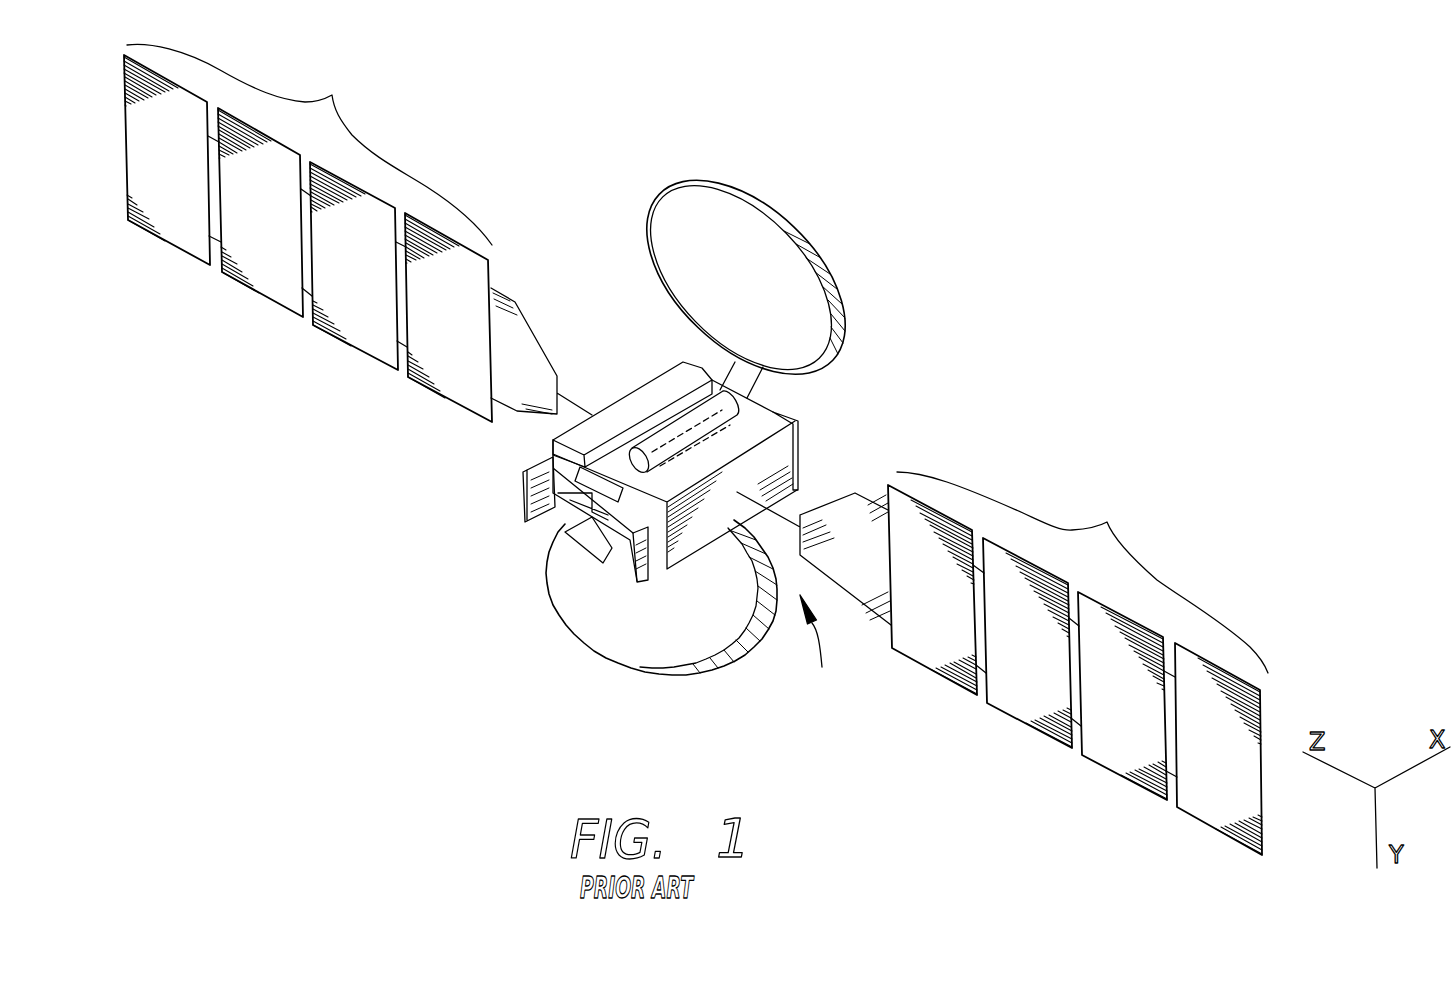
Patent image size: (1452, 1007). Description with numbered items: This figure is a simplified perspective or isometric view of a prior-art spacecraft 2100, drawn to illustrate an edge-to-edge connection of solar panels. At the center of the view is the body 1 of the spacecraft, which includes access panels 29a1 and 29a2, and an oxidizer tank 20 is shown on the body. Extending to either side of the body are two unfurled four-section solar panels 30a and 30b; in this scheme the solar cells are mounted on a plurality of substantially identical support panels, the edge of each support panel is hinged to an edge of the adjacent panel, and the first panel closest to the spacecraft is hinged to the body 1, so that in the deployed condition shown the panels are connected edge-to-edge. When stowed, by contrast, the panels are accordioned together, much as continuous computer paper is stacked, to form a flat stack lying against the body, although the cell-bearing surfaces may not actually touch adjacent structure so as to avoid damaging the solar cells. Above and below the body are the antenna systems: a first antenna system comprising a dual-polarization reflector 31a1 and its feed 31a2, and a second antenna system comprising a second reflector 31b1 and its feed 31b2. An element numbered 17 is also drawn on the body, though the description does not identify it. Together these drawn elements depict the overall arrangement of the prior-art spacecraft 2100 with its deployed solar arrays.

The body 1 is at (825, 708).
The satellite body 17 is at (763, 470).
The oxidizer tank 20 is at (743, 400).
The access panel 29a1 is at (790, 421).
The access panel 29a2 is at (627, 405).
The four-section solar panel 30a is at (358, 233).
The four-section solar panel 30b is at (1002, 663).
The dual-polarization reflector 31a1 is at (772, 215).
The feed 31a2 is at (552, 444).
The second reflector 31b1 is at (700, 642).
The feed 31b2 is at (582, 540).
The spacecraft 2100 is at (213, 502).